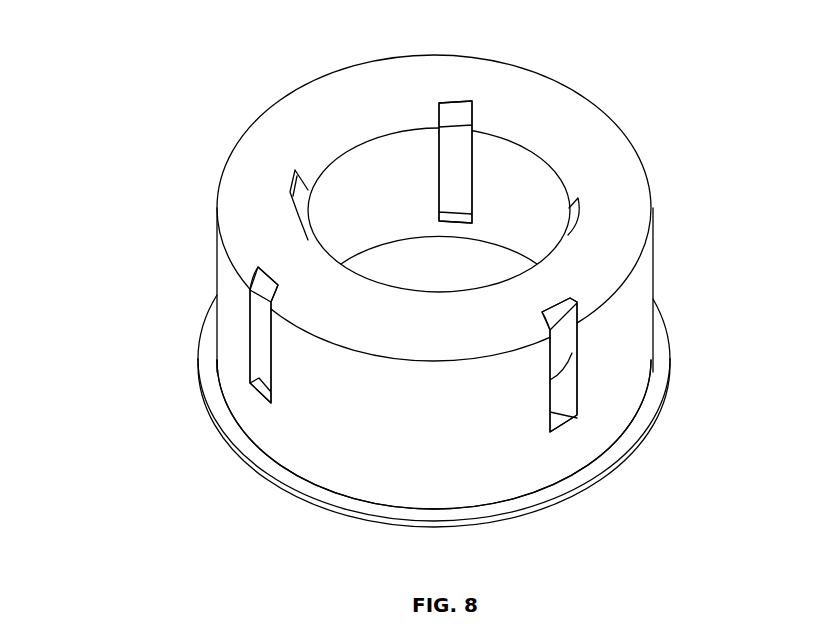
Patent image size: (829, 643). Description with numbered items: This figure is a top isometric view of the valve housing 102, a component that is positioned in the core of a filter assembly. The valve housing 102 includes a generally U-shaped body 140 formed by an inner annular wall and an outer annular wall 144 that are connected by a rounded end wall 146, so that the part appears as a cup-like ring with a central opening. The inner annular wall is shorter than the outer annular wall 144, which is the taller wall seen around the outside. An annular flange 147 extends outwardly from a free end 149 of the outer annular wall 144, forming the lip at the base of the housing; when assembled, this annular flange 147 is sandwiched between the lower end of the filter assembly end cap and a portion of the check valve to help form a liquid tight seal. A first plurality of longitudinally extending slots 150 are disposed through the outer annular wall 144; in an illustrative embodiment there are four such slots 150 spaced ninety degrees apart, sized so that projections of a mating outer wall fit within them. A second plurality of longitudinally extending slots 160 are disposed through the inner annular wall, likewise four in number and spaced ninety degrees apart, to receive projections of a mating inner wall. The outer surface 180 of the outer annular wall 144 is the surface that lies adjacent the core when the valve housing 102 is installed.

The valve housing 102 is at (155, 88).
The U-shaped body 140 is at (283, 428).
The outer annular wall 144 is at (647, 285).
The rounded end wall 146 is at (543, 90).
The annular flange 147 is at (633, 452).
The free end 149 is at (513, 503).
The slots 150 is at (262, 277).
The slots 160 is at (453, 113).
The outer surface 180 is at (340, 463).